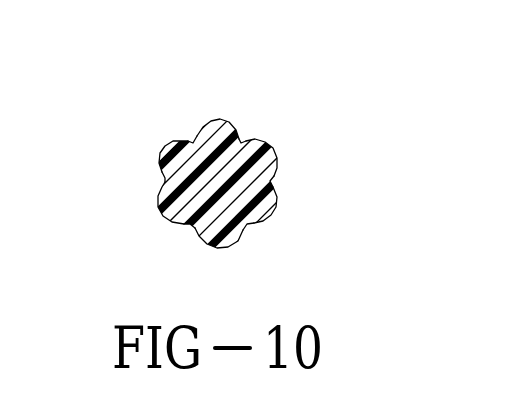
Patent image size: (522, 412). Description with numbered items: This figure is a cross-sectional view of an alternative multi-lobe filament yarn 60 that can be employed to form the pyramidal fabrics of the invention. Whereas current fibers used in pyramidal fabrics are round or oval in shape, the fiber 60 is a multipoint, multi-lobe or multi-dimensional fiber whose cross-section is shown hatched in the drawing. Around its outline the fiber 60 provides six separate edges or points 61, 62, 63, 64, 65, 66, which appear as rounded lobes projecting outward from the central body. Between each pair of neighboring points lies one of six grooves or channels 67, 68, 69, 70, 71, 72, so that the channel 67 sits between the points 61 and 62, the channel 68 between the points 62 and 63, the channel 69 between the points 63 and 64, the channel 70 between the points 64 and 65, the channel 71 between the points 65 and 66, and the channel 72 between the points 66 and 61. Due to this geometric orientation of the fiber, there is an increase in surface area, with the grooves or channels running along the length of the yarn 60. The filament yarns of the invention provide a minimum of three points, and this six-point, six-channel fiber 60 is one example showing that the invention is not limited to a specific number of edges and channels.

The filament yarn 60 is at (137, 154).
The edge or point 61 is at (168, 146).
The edge or point 62 is at (221, 119).
The edge or point 63 is at (264, 142).
The edge or point 64 is at (273, 215).
The edge or point 65 is at (220, 248).
The edge or point 66 is at (159, 217).
The channel 67 is at (192, 141).
The channel 68 is at (241, 141).
The channel 69 is at (271, 182).
The channel 70 is at (248, 224).
The channel 71 is at (189, 224).
The channel 72 is at (165, 179).